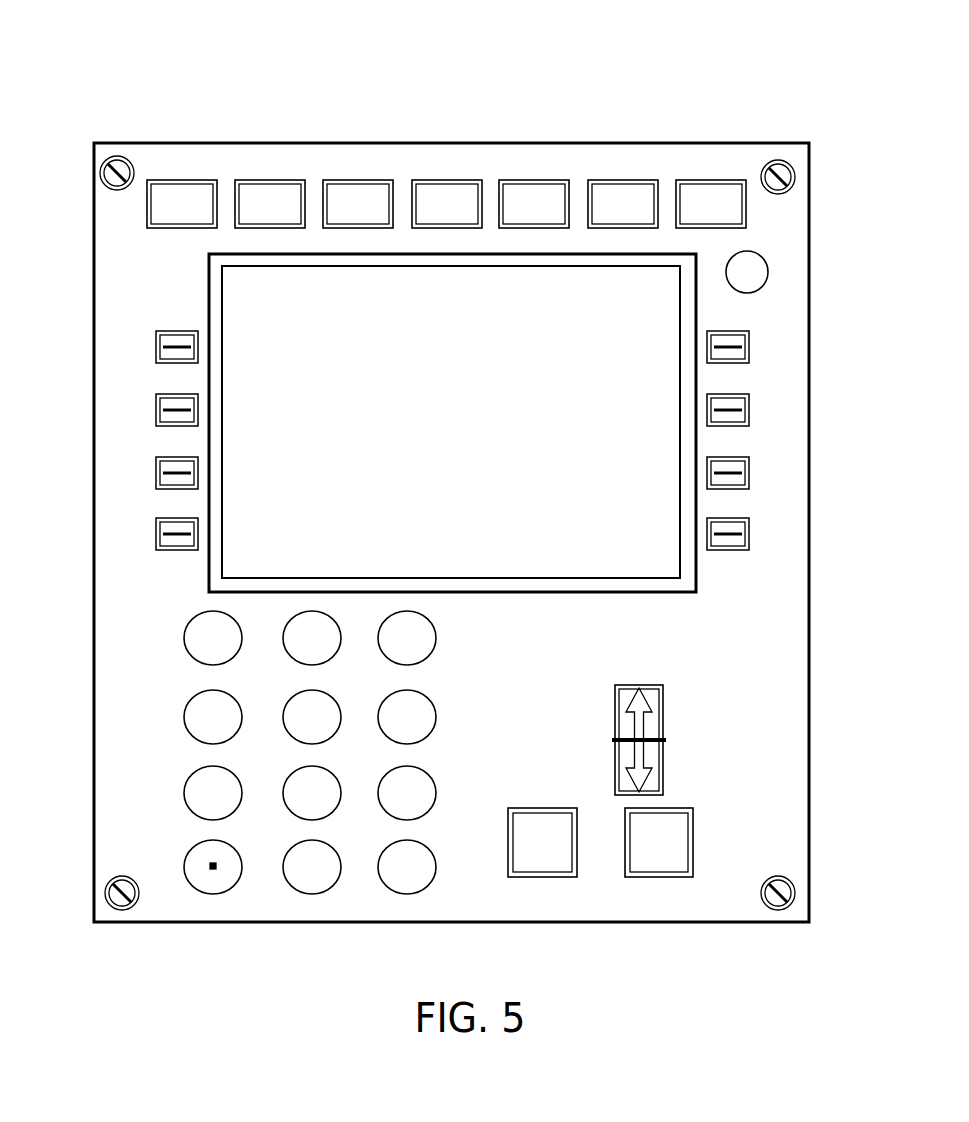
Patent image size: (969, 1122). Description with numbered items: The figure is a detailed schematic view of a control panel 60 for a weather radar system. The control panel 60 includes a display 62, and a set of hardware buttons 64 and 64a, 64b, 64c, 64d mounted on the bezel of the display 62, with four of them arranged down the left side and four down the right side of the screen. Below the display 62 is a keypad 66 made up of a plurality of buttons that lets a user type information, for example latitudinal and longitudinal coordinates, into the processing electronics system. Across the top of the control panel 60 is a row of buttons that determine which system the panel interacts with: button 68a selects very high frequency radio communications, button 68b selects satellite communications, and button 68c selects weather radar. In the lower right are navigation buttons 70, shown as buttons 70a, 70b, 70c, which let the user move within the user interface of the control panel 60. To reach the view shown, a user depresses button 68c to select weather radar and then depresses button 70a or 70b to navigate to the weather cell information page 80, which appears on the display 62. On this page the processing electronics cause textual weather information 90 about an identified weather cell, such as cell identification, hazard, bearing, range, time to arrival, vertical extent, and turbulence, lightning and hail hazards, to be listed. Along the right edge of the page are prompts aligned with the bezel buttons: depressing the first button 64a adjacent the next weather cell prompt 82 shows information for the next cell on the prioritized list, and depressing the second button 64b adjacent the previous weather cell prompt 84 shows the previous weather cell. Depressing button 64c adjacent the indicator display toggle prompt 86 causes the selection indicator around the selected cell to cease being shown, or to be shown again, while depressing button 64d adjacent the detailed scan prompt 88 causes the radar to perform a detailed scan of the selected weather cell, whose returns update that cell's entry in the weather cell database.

The control panel 60 is at (471, 67).
The display 62 is at (697, 566).
The hardware buttons 64 is at (165, 353).
The first button 64a is at (740, 343).
The second button 64b is at (740, 405).
The button 64c is at (740, 469).
The button 64d is at (740, 529).
The keypad 66 is at (178, 610).
The button 68a is at (201, 190).
The button 68b is at (378, 190).
The button 68c is at (641, 190).
The buttons 70 is at (722, 645).
The button 70a is at (680, 866).
The button 70b is at (565, 866).
The button 70c is at (657, 728).
The weather cell information page 80 is at (568, 266).
The next weather cell prompt 82 is at (652, 336).
The previous weather cell prompt 84 is at (652, 400).
The indicator display toggle prompt 86 is at (652, 462).
The detailed scan prompt 88 is at (652, 526).
The textual weather information 90 is at (262, 308).